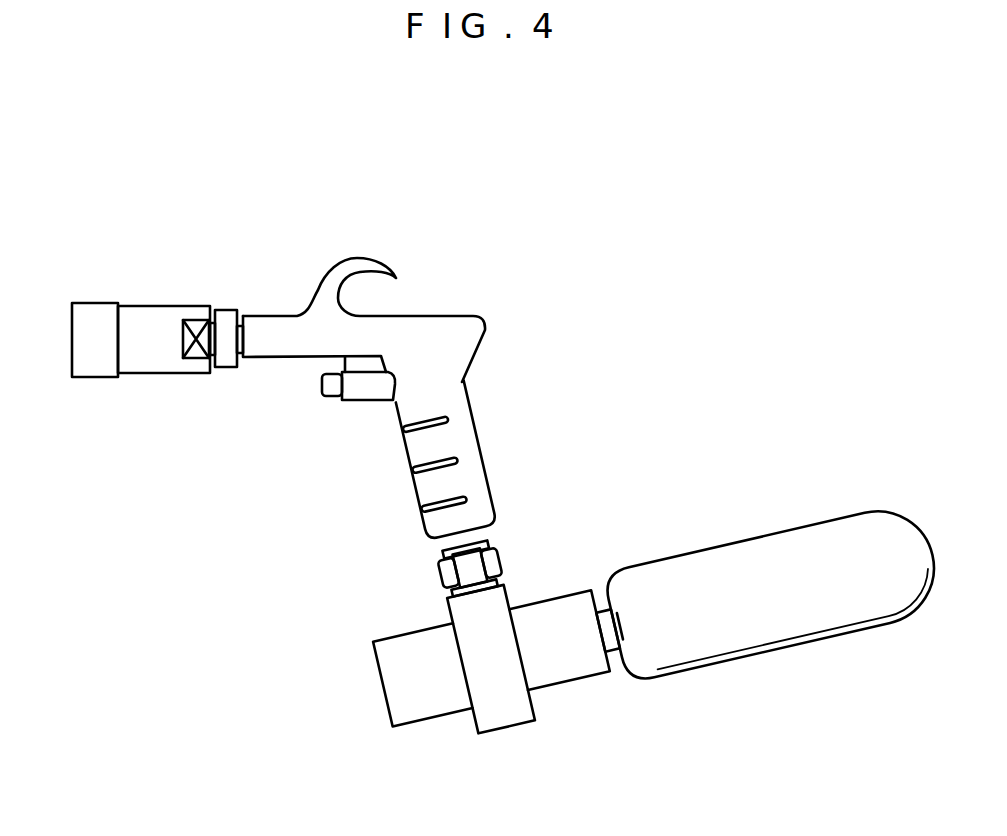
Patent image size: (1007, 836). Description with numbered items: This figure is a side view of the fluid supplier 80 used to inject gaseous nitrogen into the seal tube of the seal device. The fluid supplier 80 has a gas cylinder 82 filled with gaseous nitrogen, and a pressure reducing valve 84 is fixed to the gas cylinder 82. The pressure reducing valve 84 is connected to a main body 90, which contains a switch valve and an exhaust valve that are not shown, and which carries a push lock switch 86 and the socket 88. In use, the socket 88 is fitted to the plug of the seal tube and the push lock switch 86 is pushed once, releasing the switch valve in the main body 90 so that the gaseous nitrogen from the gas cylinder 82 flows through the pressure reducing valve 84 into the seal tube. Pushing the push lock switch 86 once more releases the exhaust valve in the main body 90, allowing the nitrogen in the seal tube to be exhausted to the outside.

The fluid supplier 80 is at (568, 227).
The gas cylinder 82 is at (892, 517).
The pressure reducing valve 84 is at (568, 685).
The push lock switch 86 is at (322, 388).
The socket 88 is at (164, 306).
The main body 90 is at (486, 330).